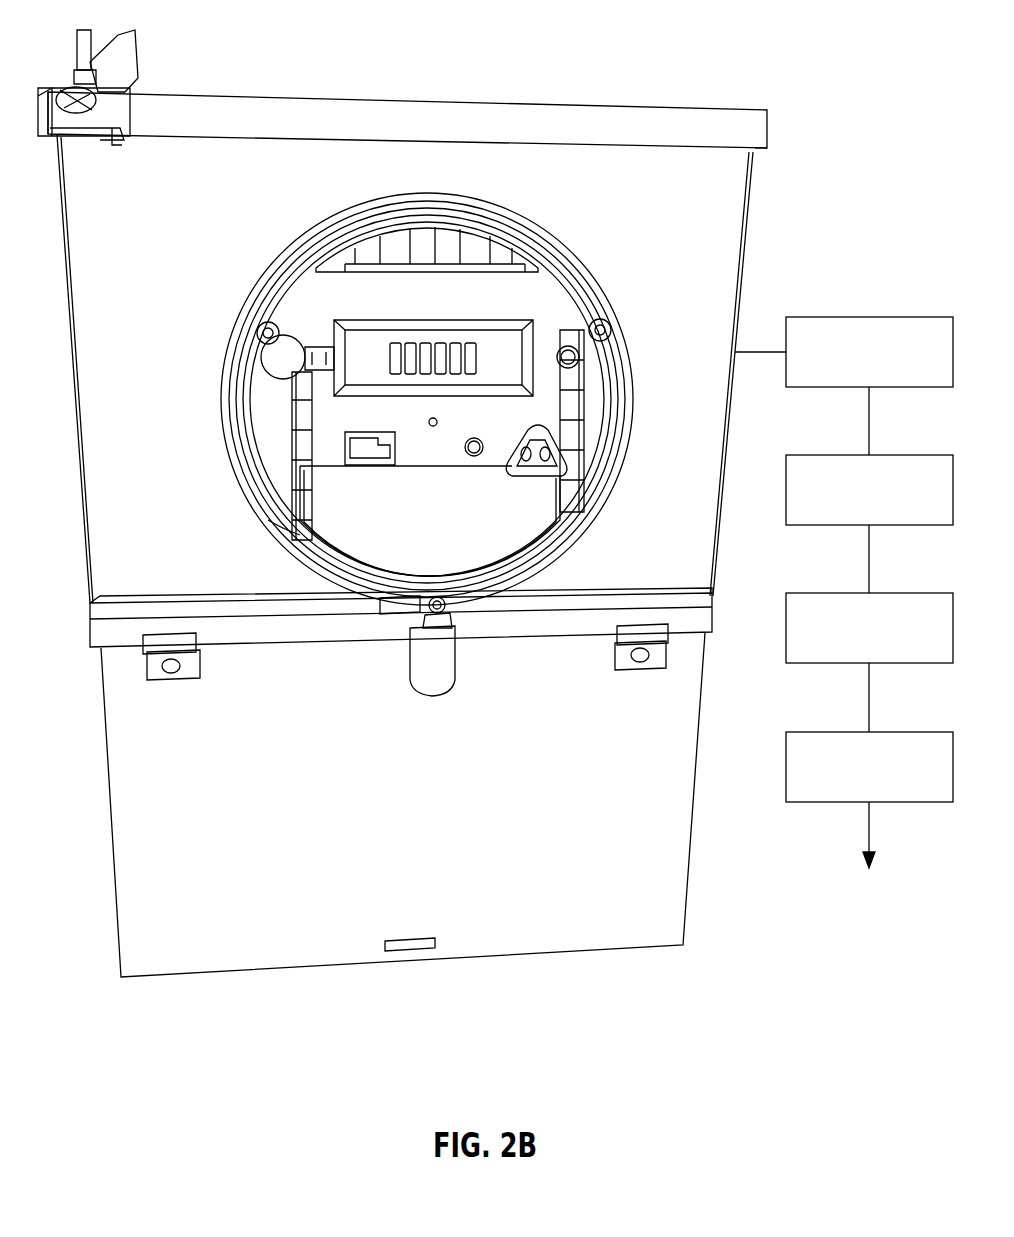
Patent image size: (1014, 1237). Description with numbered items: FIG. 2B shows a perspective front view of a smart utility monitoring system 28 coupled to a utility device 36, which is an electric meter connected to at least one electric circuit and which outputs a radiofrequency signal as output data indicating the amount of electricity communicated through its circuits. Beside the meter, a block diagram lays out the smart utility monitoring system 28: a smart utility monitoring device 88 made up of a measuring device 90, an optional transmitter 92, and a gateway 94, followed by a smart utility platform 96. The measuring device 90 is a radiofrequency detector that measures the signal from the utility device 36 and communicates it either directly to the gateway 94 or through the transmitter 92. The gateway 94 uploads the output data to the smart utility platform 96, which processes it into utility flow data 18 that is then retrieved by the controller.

The utility flow data 18 is at (866, 828).
The smart utility monitoring system 28 is at (860, 290).
The utility device 36 is at (628, 102).
The smart utility monitoring device 88 is at (831, 285).
The measuring device 90 is at (840, 316).
The transmitter 92 is at (840, 454).
The gateway 94 is at (840, 592).
The smart utility platform 96 is at (840, 731).